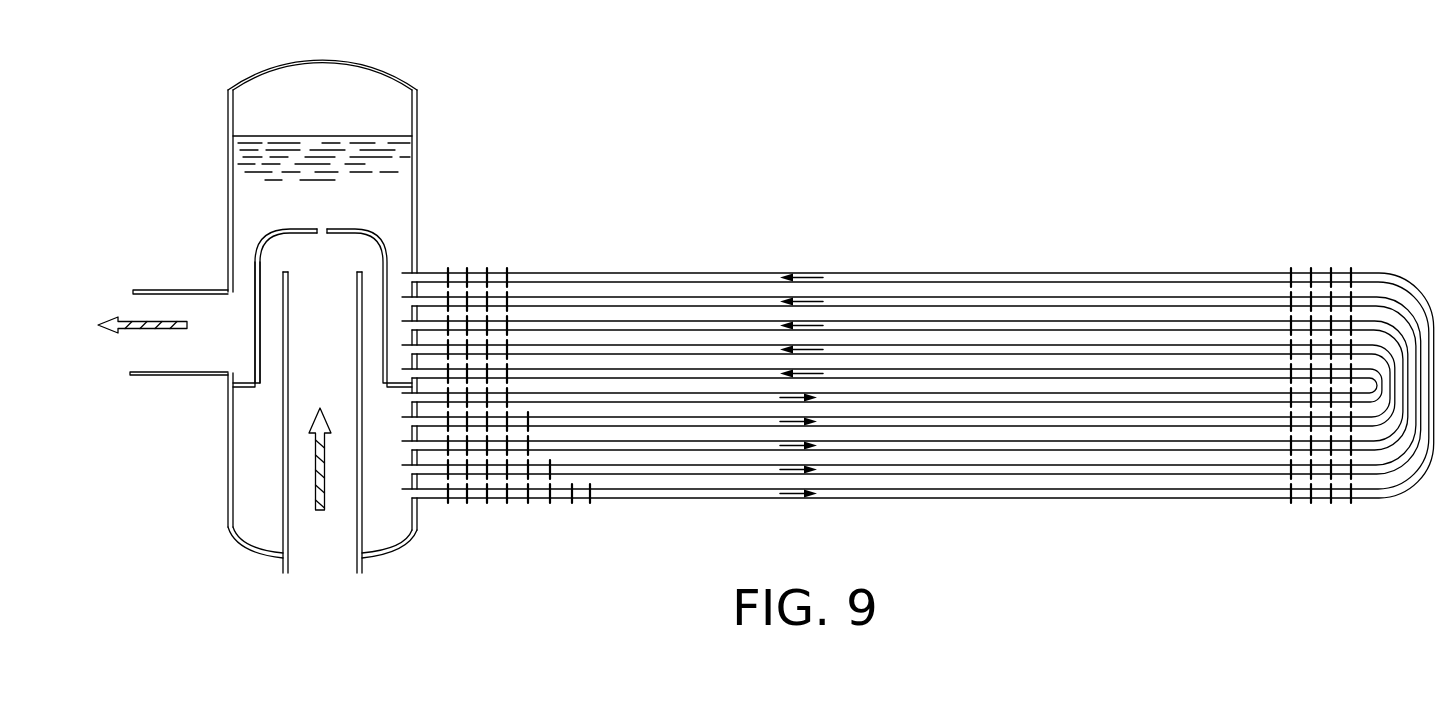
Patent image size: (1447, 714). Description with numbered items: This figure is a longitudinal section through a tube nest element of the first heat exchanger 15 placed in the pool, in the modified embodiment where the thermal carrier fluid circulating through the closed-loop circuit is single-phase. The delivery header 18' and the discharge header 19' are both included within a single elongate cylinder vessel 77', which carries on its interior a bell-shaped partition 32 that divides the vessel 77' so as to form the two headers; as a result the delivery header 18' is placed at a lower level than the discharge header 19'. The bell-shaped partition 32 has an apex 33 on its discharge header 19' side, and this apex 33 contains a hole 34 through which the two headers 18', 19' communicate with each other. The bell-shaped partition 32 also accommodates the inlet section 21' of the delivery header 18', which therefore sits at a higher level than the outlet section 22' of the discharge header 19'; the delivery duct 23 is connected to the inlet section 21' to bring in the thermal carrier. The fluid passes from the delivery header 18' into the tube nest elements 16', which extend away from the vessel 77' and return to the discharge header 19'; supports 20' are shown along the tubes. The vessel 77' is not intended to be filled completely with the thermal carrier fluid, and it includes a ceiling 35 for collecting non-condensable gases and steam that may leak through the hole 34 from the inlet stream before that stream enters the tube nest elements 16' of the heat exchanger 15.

The first heat exchanger 15 is at (603, 170).
The ceiling 35 is at (279, 88).
The elongate cylinder vessel 77' is at (343, 273).
The discharge header 19' is at (353, 133).
The hole 34 is at (317, 230).
The apex 33 is at (360, 233).
The bell-shaped partition 32 is at (255, 277).
The inlet section 21' is at (379, 394).
The outlet section 22' is at (163, 356).
The delivery duct 23 is at (310, 530).
The delivery header 18' is at (401, 552).
The tube nest elements 16' is at (918, 356).
The tube supports 20' is at (899, 387).